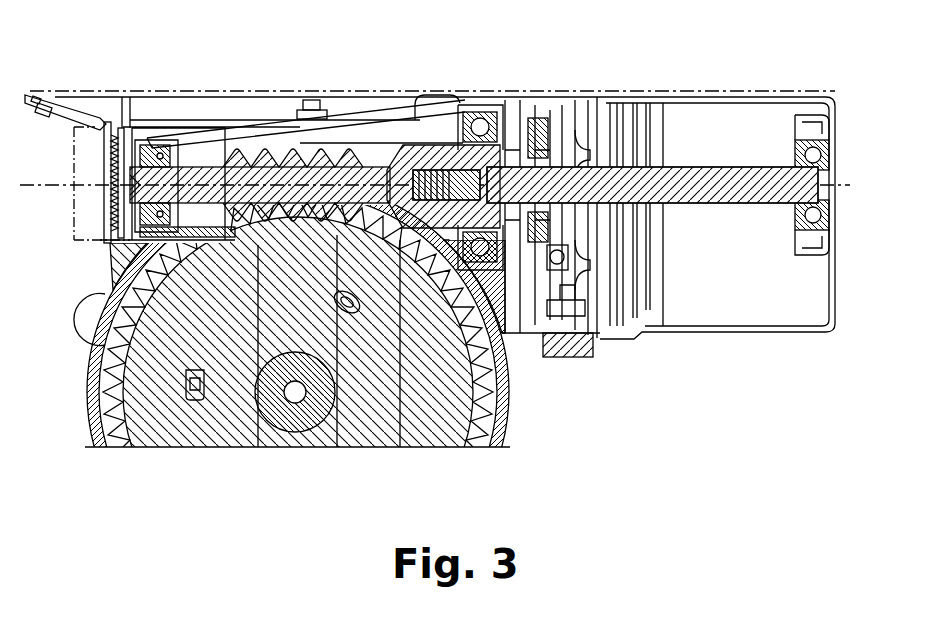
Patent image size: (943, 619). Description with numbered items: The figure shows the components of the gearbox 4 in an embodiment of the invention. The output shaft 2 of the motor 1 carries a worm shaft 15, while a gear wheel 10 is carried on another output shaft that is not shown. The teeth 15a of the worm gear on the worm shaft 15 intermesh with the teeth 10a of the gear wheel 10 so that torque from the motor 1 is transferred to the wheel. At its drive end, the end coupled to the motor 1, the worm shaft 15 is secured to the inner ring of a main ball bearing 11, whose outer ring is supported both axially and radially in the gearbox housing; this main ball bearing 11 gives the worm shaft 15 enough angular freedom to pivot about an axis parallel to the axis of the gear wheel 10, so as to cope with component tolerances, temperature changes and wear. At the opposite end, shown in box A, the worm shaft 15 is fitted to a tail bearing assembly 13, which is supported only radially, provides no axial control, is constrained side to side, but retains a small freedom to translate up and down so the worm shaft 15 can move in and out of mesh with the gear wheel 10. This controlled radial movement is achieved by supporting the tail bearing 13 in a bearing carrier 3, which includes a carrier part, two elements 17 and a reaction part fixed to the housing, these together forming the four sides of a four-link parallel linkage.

The motor 1 is at (752, 298).
The output shaft 2 is at (693, 198).
The bearing carrier 3 is at (182, 150).
The gearbox 4 is at (553, 420).
The gear wheel 10 is at (291, 392).
The teeth of the wheel 10a is at (258, 447).
The main ball bearing 11 is at (520, 335).
The tail bearing assembly 13 is at (188, 142).
The worm shaft 15 is at (400, 447).
The teeth of the worm gear 15a is at (337, 447).
The elements 17 is at (200, 148).
The box A is at (262, 150).